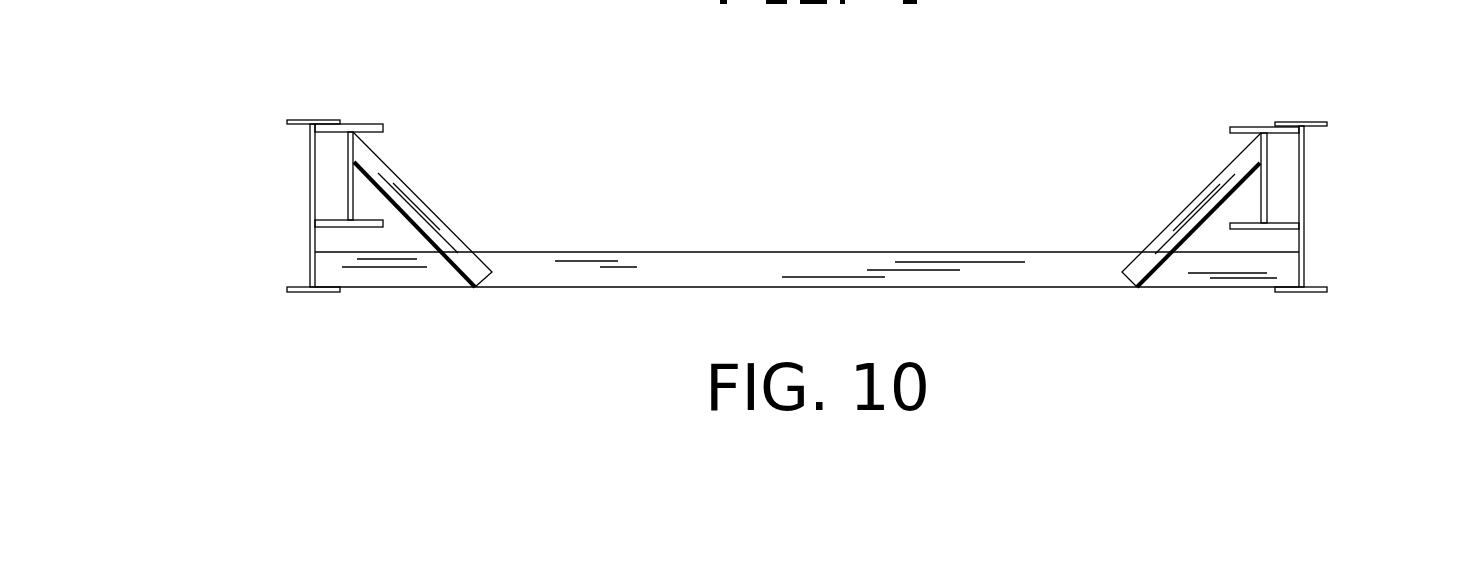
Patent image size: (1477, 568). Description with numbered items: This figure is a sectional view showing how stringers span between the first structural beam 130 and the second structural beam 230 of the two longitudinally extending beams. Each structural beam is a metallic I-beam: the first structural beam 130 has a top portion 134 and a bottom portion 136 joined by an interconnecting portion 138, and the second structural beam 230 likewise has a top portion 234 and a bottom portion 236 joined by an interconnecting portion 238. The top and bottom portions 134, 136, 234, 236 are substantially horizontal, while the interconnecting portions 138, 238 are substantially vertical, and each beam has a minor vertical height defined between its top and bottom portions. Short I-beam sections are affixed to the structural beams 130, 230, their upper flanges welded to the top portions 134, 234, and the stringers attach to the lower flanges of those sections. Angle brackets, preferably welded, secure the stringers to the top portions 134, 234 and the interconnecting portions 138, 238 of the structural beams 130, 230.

The first structural beam 130 is at (383, 124).
The top portion 134 is at (348, 124).
The bottom portion 136 is at (350, 227).
The interconnecting portion 138 is at (348, 177).
The second structural beam 230 is at (1231, 127).
The top portion 234 is at (1265, 127).
The bottom portion 236 is at (1266, 229).
The interconnecting portion 238 is at (1267, 178).